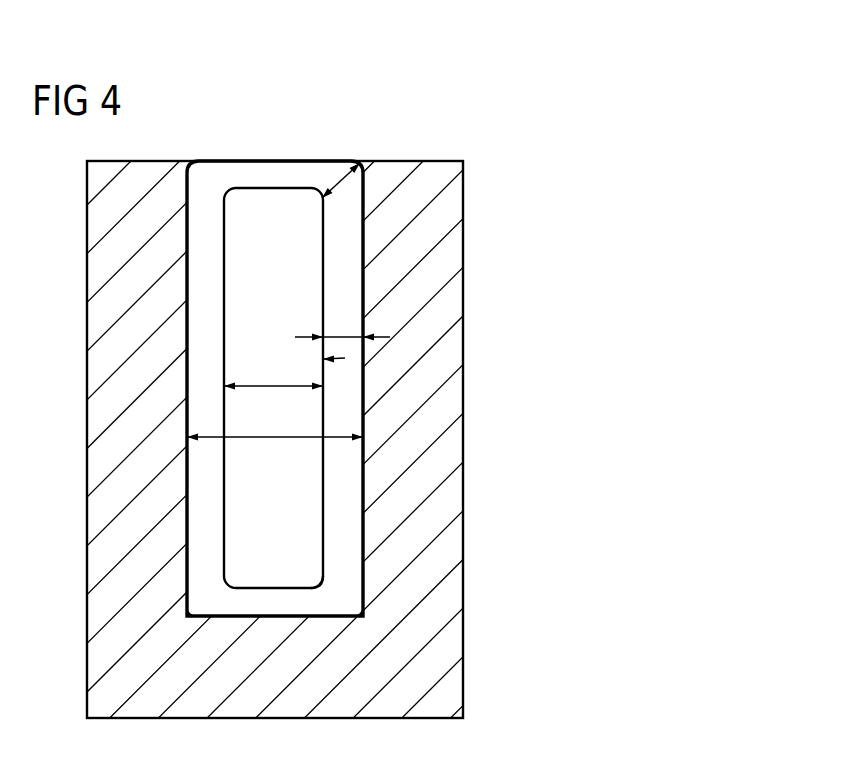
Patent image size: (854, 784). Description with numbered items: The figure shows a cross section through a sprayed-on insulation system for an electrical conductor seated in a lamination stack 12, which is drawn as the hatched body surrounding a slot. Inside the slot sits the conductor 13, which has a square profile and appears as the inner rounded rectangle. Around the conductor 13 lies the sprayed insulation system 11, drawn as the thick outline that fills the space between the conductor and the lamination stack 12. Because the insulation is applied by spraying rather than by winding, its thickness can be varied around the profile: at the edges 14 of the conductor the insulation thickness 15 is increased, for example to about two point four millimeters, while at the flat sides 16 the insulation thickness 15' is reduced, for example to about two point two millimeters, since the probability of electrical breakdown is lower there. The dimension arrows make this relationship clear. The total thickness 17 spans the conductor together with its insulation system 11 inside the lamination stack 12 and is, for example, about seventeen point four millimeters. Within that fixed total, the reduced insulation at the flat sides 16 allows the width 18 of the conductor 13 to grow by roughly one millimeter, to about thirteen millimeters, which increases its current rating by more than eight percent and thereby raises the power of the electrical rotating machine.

The sprayed insulation system 11 is at (205, 328).
The lamination stack 12 is at (97, 382).
The conductor 13 is at (245, 263).
The edges 14 is at (320, 584).
The insulation thickness at the edges 15 is at (335, 155).
The insulation thickness at the flat sides 15' is at (336, 297).
The flat sides 16 is at (345, 358).
The total thickness 17 is at (268, 440).
The width of the conductor 18 is at (270, 383).